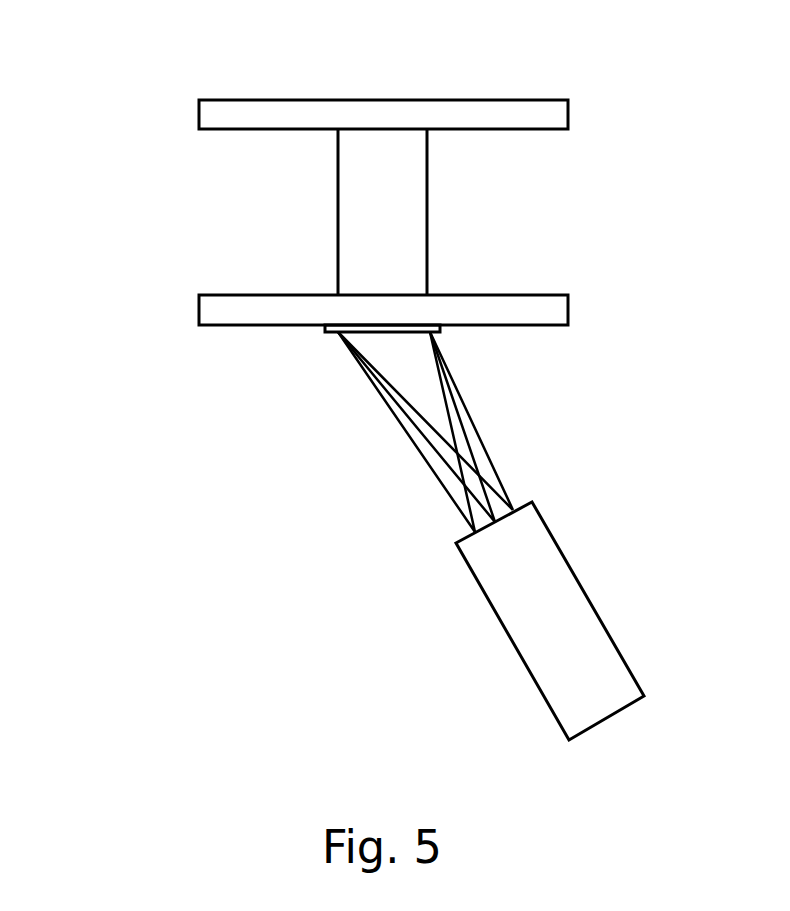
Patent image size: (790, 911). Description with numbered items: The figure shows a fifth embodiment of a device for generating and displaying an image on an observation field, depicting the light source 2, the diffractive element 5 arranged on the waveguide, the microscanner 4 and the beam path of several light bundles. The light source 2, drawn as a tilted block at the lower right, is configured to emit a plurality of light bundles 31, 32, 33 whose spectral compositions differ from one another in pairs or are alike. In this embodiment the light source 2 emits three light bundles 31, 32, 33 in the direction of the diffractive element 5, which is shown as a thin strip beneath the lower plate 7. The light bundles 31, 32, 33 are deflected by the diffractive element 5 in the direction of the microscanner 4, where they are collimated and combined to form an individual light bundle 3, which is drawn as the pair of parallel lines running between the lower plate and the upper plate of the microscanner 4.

The light source 2 is at (578, 577).
The light bundle 3 is at (338, 222).
The light bundle 31 is at (465, 432).
The light bundle 32 is at (465, 427).
The light bundle 33 is at (465, 421).
The microscanner 4 is at (371, 100).
The diffractive element 5 is at (403, 327).
The lower plate 7 is at (568, 310).